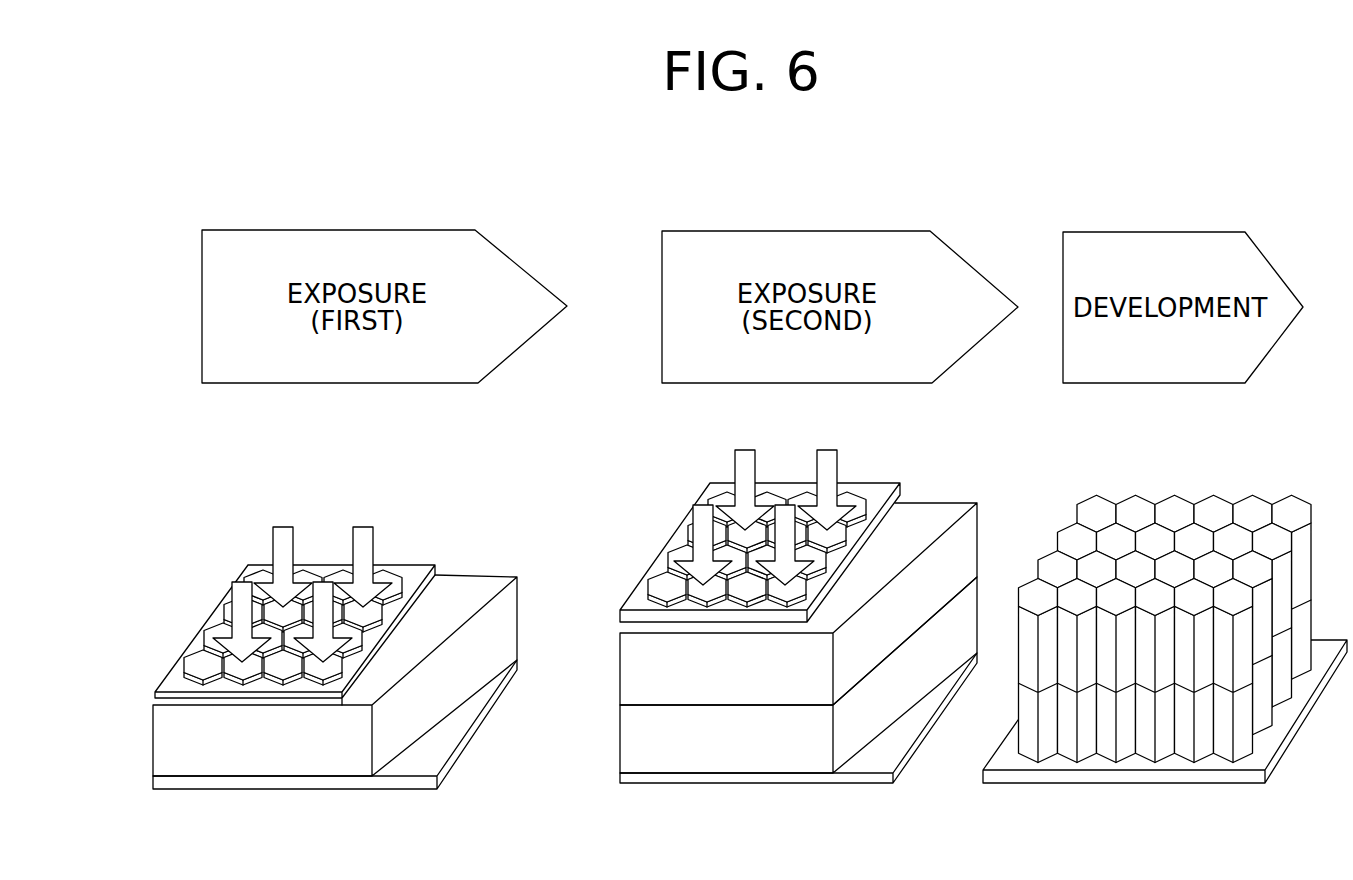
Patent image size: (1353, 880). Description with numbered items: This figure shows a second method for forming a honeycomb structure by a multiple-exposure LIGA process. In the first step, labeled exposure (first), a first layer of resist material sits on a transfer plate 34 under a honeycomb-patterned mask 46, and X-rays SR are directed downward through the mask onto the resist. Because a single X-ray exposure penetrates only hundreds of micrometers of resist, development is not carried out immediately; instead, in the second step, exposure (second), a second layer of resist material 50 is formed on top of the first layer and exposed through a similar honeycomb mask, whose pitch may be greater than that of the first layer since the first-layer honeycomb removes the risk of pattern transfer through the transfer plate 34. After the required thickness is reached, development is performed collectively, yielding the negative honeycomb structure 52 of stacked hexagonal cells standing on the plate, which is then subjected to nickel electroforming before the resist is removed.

The transfer plate 34 is at (433, 747).
The exposure mask 46 is at (233, 677).
The resist material of the second layer 50 is at (858, 660).
The negative honeycomb structure 52 is at (1267, 502).
The synchrotron radiation SR is at (283, 523).